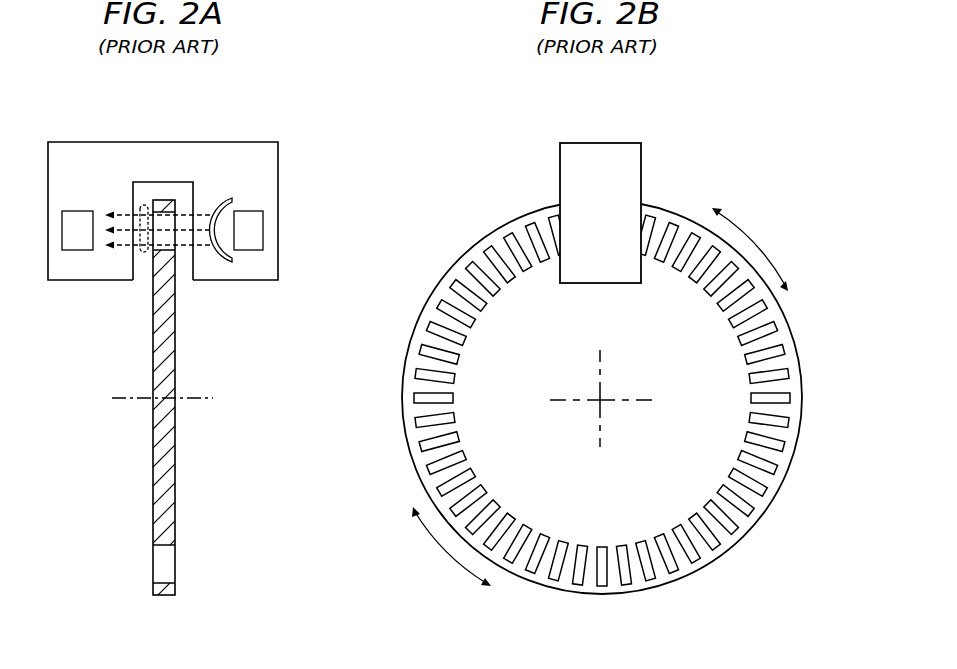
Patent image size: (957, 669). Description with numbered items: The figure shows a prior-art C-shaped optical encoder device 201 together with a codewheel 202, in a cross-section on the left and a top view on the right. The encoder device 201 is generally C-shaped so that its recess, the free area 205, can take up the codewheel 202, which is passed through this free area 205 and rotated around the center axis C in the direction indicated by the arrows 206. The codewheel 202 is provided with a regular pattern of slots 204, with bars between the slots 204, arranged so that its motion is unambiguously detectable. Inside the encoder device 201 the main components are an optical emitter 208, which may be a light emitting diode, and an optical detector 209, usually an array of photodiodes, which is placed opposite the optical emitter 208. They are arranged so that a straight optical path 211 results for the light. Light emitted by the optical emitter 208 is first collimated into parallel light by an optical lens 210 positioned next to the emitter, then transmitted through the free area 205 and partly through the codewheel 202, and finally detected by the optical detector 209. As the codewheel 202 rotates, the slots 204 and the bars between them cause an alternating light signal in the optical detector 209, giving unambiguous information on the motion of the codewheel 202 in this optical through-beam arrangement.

In FIG. 2A, the C-shaped optical encoder device 201 is at (107, 140).
In FIG. 2B, the C-shaped optical encoder device 201 is at (621, 138).
In FIG. 2A, the codewheel 202 is at (146, 498).
In FIG. 2B, the codewheel 202 is at (717, 572).
In FIG. 2A, the slots 204 is at (168, 575).
In FIG. 2B, the slots 204 is at (511, 279).
In FIG. 2A, the free area 205 is at (170, 190).
In FIG. 2B, the arrows 206 is at (755, 247).
In FIG. 2A, the optical emitter 208 is at (250, 210).
In FIG. 2A, the optical detector 209 is at (75, 210).
In FIG. 2A, the optical lens 210 is at (215, 262).
In FIG. 2A, the optical path 211 is at (145, 252).